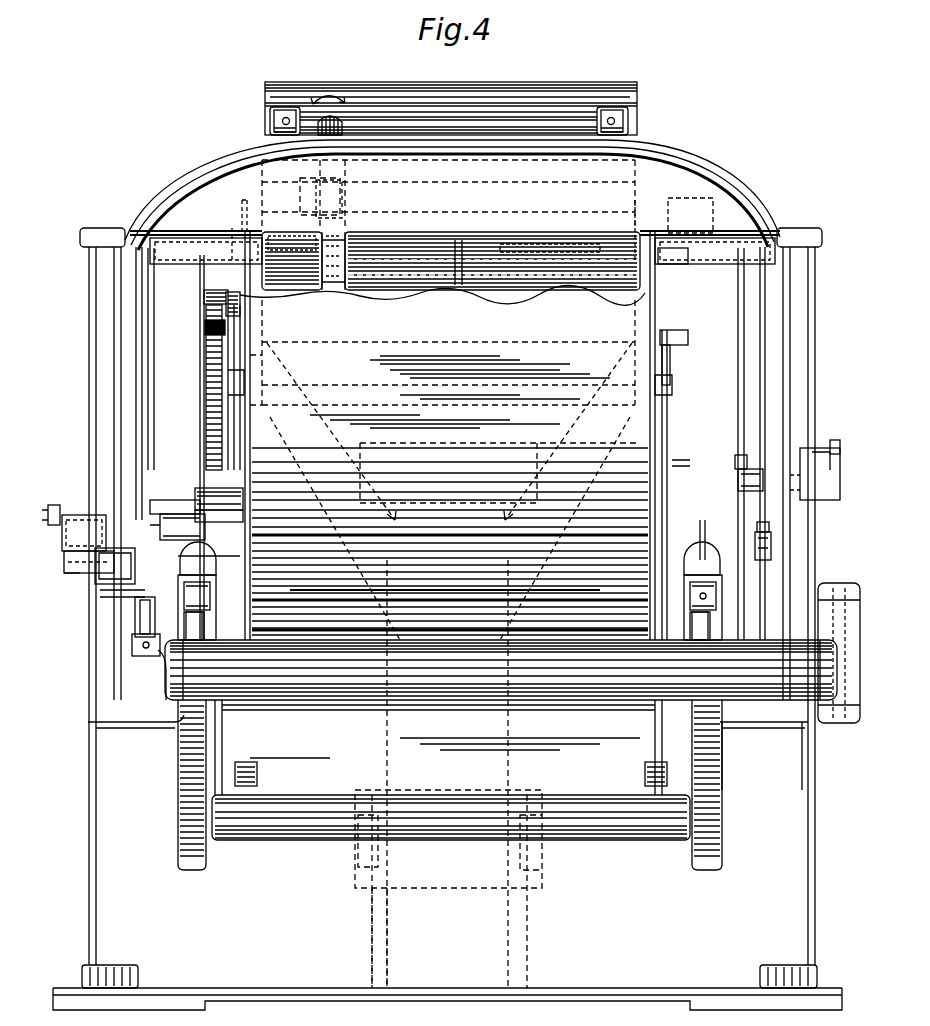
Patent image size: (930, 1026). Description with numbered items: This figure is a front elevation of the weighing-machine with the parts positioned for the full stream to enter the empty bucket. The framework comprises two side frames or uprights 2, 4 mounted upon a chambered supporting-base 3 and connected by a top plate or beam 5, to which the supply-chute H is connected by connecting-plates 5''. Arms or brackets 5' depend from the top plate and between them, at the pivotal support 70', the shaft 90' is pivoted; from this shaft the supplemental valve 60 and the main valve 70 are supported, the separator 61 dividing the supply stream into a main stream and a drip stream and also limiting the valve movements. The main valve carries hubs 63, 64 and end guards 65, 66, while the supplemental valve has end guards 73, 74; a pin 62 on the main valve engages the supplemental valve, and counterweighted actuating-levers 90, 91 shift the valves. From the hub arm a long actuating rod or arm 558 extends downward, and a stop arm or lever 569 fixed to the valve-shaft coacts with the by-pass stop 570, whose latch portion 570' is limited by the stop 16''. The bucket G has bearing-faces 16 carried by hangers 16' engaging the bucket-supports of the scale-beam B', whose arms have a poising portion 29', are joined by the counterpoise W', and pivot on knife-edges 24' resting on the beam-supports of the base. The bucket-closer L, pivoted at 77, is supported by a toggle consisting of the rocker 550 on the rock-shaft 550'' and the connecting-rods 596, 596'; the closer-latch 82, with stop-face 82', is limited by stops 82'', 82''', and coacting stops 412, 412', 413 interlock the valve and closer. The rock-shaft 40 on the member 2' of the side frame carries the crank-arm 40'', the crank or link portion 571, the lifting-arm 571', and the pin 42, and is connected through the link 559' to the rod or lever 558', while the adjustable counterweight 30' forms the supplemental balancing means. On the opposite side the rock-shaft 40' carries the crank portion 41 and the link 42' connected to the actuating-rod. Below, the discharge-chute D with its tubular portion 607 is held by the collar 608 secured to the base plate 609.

The supply-chute H is at (560, 100).
The connecting-plates 5'' is at (451, 121).
The separator 61 is at (340, 125).
The top plate or beam 5 is at (451, 195).
The counterweighted actuating-lever 91 is at (243, 205).
The end guard 73 is at (238, 232).
The pin 62 is at (312, 190).
The end guard 74 is at (310, 228).
The hub 63 is at (340, 232).
The counterweighted actuating-lever 90 is at (689, 205).
The end guard 66 is at (636, 205).
The supplemental valve 60 is at (302, 272).
The end guard 65 is at (386, 232).
The main valve 70 is at (466, 240).
The shaft 90' is at (550, 224).
The pivotal support 70' is at (449, 262).
The arms or brackets 5' is at (446, 444).
The hub 64 is at (672, 264).
The bucket G is at (447, 436).
The rock-shaft 550'' is at (474, 372).
The pipe or tubular portion 607 is at (395, 592).
The side frame 2 is at (111, 606).
The member of side frame 2' is at (104, 383).
The side frame 4 is at (802, 372).
The stop 412 is at (193, 299).
The stop 412' is at (263, 309).
The stop 413 is at (206, 334).
The rod or lever 558' is at (178, 447).
The bucket-discharge stop or rocker 550 is at (192, 387).
The connecting-rod 596 is at (203, 387).
The stops 82'' is at (241, 499).
The stop 82''' is at (243, 515).
The stop-face 82' is at (160, 500).
The closer-latch 82 is at (161, 527).
The stop 16'' is at (206, 542).
The link 559' is at (237, 546).
The bearing-faces 16 is at (450, 591).
The hangers 16' is at (697, 530).
The pin 42 is at (59, 509).
The crank-arm 40'' is at (71, 538).
The rock-shaft 40 is at (75, 572).
The crank or link portion 571 is at (90, 582).
The arm 571' is at (94, 613).
The adjustable counterweight 30' is at (126, 617).
The pivots or knife-edges 24' is at (142, 657).
The poising portion 29' is at (447, 626).
The stop arm or lever 569 is at (760, 350).
The actuating rod or arm 558 is at (697, 485).
The connecting-rod 596' is at (702, 451).
The link 42' is at (725, 459).
The crank portion 41 is at (740, 472).
The rock-shaft 40' is at (826, 470).
The latch portion 570' is at (801, 532).
The by-pass stop 570 is at (798, 547).
The scale-beam B' is at (512, 653).
The counterpoise W' is at (438, 747).
The discharge-chute D is at (385, 757).
The pivot 77 is at (258, 777).
The annular flange or collar 608 is at (524, 792).
The base plate or frame 609 is at (372, 893).
The bucket-closer L is at (451, 830).
The supporting-base 3 is at (800, 849).